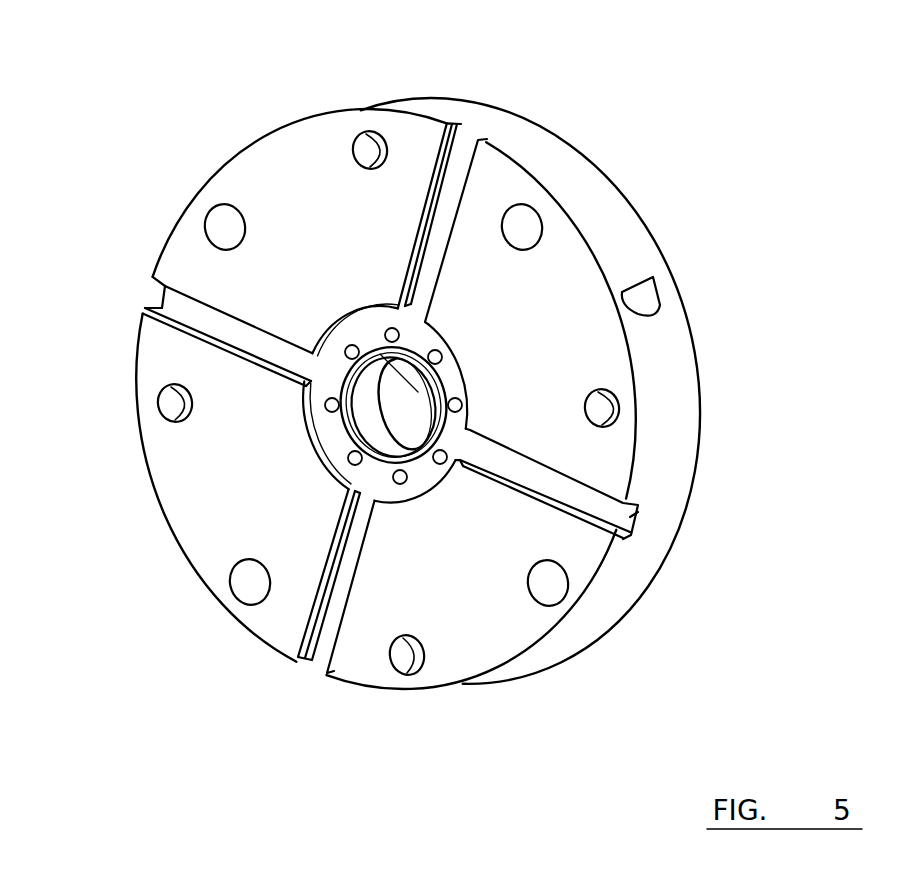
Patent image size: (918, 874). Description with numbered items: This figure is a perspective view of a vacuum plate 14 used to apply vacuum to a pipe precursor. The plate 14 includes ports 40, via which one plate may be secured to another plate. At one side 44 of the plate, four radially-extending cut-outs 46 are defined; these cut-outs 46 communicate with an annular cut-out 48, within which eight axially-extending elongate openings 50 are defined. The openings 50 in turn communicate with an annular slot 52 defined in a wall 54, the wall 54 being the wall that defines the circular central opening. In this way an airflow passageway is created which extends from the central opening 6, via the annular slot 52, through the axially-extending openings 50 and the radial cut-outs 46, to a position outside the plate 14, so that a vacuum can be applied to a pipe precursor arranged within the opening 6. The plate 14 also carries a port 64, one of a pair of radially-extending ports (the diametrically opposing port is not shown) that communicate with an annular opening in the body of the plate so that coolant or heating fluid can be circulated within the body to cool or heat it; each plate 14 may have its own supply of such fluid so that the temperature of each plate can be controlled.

The opening 6 is at (362, 389).
The vacuum plate 14 is at (228, 157).
The ports 40 is at (370, 147).
The side 44 is at (572, 365).
The radially-extending cut-outs 46 is at (467, 143).
The annular cut-out 48 is at (428, 478).
The axially-extending elongate openings 50 is at (460, 402).
The annular slot 52 is at (362, 389).
The wall 54 is at (385, 442).
The port 64 is at (648, 298).